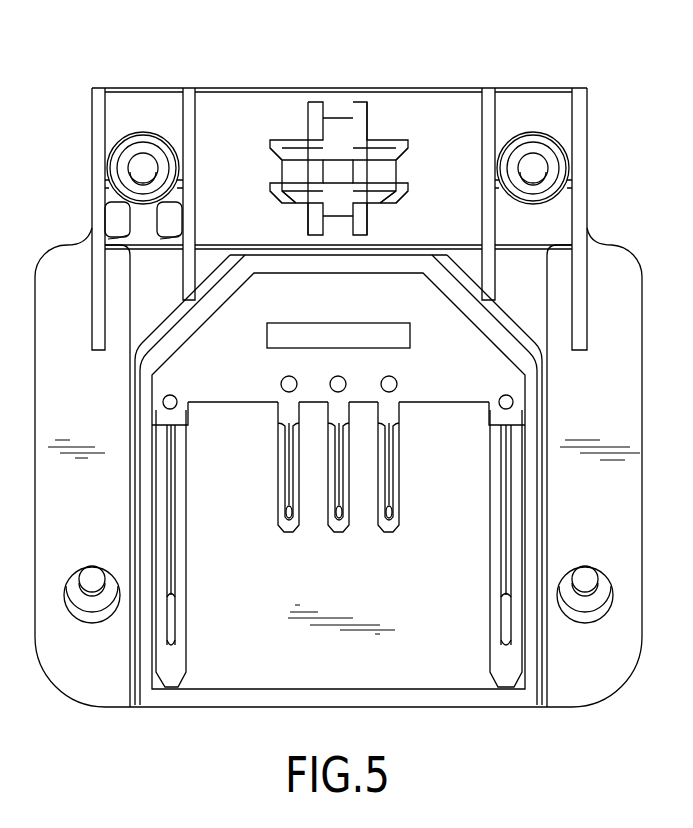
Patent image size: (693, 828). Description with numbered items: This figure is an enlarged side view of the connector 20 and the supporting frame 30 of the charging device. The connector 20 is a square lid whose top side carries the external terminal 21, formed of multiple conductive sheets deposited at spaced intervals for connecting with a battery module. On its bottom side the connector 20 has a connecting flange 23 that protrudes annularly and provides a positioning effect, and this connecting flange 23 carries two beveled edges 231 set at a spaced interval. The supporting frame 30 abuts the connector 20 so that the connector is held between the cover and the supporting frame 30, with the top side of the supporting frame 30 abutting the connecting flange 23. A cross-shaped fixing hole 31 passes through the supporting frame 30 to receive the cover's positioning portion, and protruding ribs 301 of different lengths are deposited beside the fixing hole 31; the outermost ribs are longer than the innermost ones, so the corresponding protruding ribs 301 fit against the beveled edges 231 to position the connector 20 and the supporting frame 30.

The connector 20 is at (372, 476).
The external terminal 21 is at (405, 478).
The connecting flange 23 is at (528, 513).
The beveled edges 231 is at (466, 283).
The supporting frame 30 is at (384, 195).
The protruding ribs 301 is at (488, 118).
The fixing hole 31 is at (352, 140).